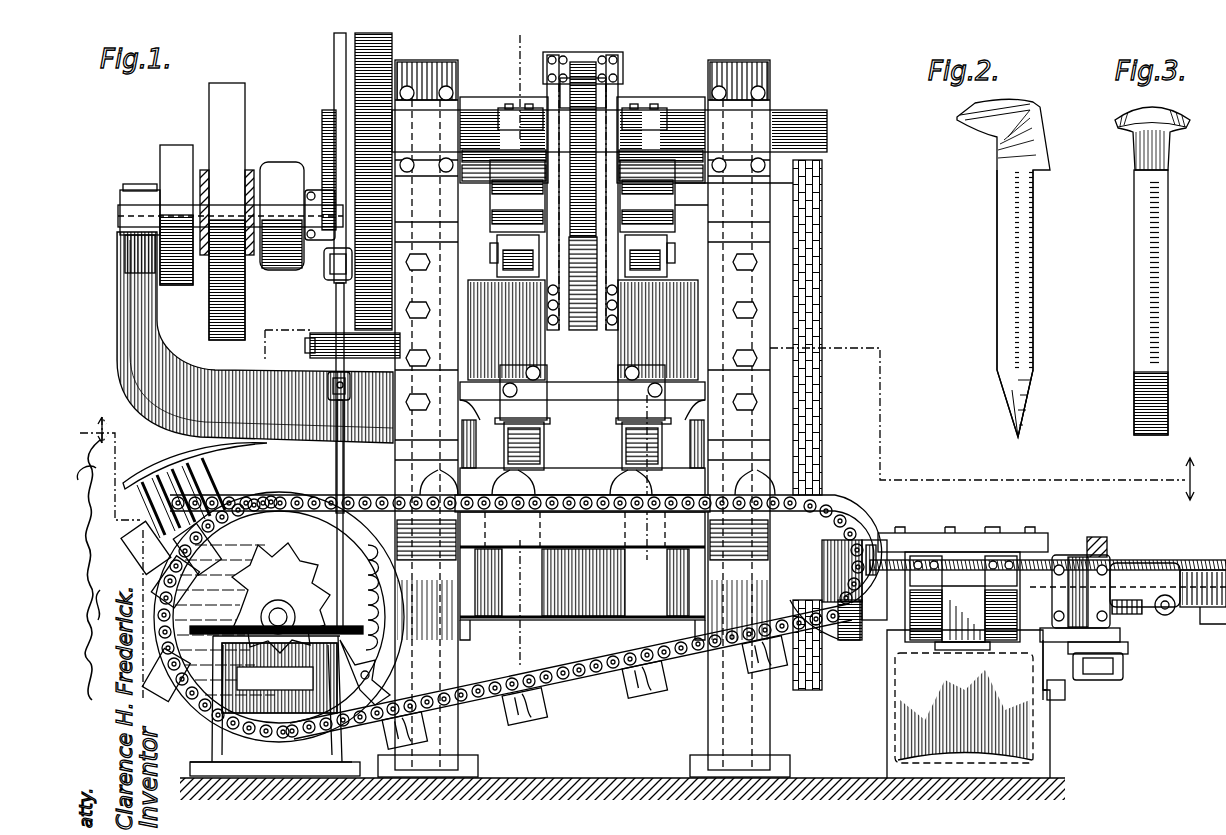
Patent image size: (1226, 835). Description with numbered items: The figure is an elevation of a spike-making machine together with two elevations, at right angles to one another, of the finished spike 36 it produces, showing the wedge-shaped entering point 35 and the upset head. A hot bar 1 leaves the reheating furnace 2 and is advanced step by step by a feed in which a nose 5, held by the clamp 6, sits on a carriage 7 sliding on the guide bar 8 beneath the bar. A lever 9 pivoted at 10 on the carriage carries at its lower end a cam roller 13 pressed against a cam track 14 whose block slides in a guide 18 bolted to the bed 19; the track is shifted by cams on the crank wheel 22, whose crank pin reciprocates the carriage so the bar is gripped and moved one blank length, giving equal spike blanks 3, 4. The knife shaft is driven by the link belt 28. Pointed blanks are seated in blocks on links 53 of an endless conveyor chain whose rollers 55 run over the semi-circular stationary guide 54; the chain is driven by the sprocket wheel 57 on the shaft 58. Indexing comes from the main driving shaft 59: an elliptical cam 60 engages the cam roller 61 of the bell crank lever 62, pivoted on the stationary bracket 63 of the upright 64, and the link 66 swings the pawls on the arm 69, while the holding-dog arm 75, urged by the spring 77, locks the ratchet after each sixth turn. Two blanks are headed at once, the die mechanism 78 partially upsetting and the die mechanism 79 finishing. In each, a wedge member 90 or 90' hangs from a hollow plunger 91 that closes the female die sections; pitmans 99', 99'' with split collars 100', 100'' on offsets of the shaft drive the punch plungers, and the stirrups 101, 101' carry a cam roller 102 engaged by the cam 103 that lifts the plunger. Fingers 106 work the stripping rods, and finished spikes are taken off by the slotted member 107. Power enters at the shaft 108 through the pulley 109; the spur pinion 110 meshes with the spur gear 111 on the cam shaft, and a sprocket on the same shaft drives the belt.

In FIG. 1, the bar 1 is at (1125, 582).
In FIG. 1, the reheating furnace 2 is at (1225, 518).
In FIG. 1, the spike blank 3 is at (898, 548).
In FIG. 1, the spike blank 4 is at (977, 545).
In FIG. 1, the nose 5 is at (313, 130).
In FIG. 1, the clamp 6 is at (529, 41).
In FIG. 1, the carriage 7 is at (650, 408).
In FIG. 1, the guide bar 8 is at (1195, 624).
In FIG. 1, the lever 9 is at (1072, 580).
In FIG. 1, the pivot 10 is at (1102, 560).
In FIG. 1, the cam roller 13 is at (1065, 686).
In FIG. 1, the cam track 14 is at (1123, 660).
In FIG. 1, the guide 18 is at (1123, 676).
In FIG. 1, the bed 19 is at (1050, 722).
In FIG. 1, the wheel 22 is at (348, 675).
In FIG. 1, the link belt 28 is at (823, 264).
In FIG. 2, the entering point 35 is at (1027, 405).
In FIG. 3, the entering point 35 is at (1168, 405).
In FIG. 2, the spike 36 is at (1033, 258).
In FIG. 3, the spike 36 is at (1168, 262).
In FIG. 1, the link 53 is at (830, 568).
In FIG. 1, the stationary guide 54 is at (864, 640).
In FIG. 1, the rollers 55 is at (600, 688).
In FIG. 1, the sprocket wheel 57 is at (262, 617).
In FIG. 1, the shaft 58 is at (278, 580).
In FIG. 1, the main driving shaft 59 is at (796, 112).
In FIG. 1, the elliptical cam 60 is at (334, 74).
In FIG. 1, the cam roller 61 is at (324, 266).
In FIG. 1, the bell crank lever 62 is at (334, 300).
In FIG. 1, the stationary bracket 63 is at (352, 335).
In FIG. 1, the stationary upright 64 is at (428, 78).
In FIG. 1, the link 66 is at (336, 452).
In FIG. 1, the arm 69 is at (365, 672).
In FIG. 1, the arm 75 is at (275, 706).
In FIG. 1, the spring 77 is at (268, 662).
In FIG. 1, the die mechanism 78 is at (668, 388).
In FIG. 1, the die mechanism 79 is at (540, 407).
In FIG. 1, the wedge member 90 is at (633, 444).
In FIG. 1, the wedge member 90' is at (537, 444).
In FIG. 1, the plunger 91 is at (497, 296).
In FIG. 1, the pitman 99' is at (503, 196).
In FIG. 1, the block 99'' is at (661, 196).
In FIG. 1, the split collar 100' is at (504, 130).
In FIG. 1, the bearing block 100'' is at (661, 130).
In FIG. 1, the stirrup 101 is at (646, 245).
In FIG. 1, the block 101' is at (517, 245).
In FIG. 1, the cam roller 102 is at (596, 58).
In FIG. 1, the cam 103 is at (583, 58).
In FIG. 1, the finger 106 is at (690, 207).
In FIG. 1, the slotted member 107 is at (195, 450).
In FIG. 1, the main driving shaft 108 is at (121, 210).
In FIG. 1, the pulley 109 is at (233, 100).
In FIG. 1, the spur pinion 110 is at (335, 165).
In FIG. 1, the spur gear 111 is at (392, 38).